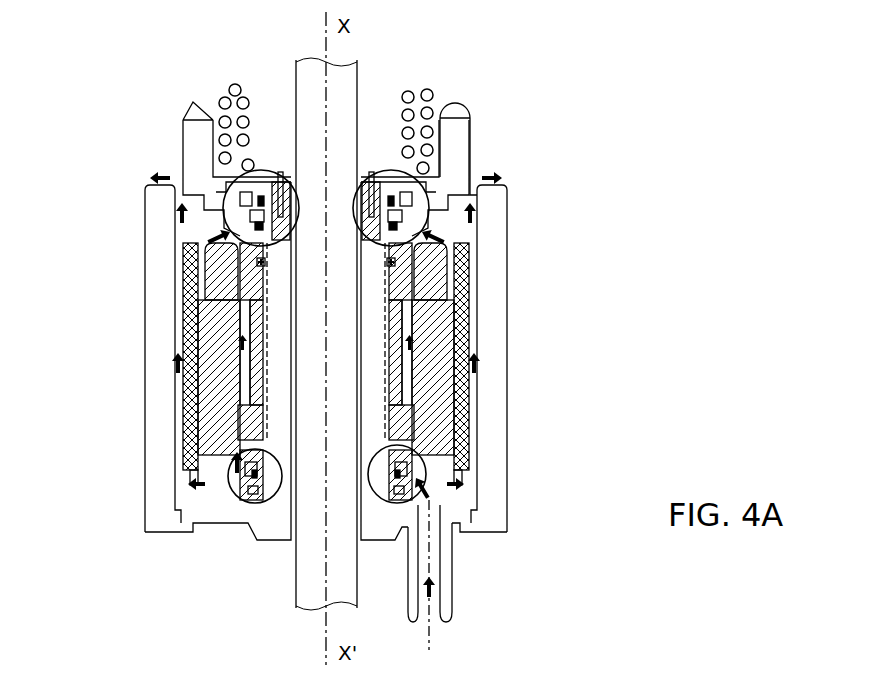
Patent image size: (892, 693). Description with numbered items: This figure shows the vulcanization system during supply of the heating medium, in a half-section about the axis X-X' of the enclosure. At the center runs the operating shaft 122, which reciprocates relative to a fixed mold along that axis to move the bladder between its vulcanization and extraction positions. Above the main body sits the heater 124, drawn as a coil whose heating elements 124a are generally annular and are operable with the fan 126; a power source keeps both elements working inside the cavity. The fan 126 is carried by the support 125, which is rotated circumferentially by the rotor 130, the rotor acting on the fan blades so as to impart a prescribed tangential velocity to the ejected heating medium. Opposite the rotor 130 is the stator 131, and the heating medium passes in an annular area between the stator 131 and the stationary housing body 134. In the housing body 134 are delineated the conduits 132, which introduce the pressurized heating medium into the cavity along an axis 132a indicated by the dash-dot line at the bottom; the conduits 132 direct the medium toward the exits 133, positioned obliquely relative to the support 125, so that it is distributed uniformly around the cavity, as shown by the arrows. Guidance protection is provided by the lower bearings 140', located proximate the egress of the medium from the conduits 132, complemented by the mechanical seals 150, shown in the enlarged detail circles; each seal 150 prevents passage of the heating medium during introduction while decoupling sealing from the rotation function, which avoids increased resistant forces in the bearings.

The operating shaft 122 is at (318, 517).
The heater 124 is at (428, 92).
The heating elements 124a is at (222, 121).
The support 125 is at (243, 200).
The fan 126 is at (462, 125).
The rotor 130 is at (395, 317).
The stator 131 is at (433, 343).
The conduits 132 is at (445, 585).
The inlet axis 132a is at (433, 610).
The exits 133 is at (180, 195).
The housing body 134 is at (500, 478).
The lower bearings 140' is at (329, 445).
The mechanical seals 150 is at (250, 218).